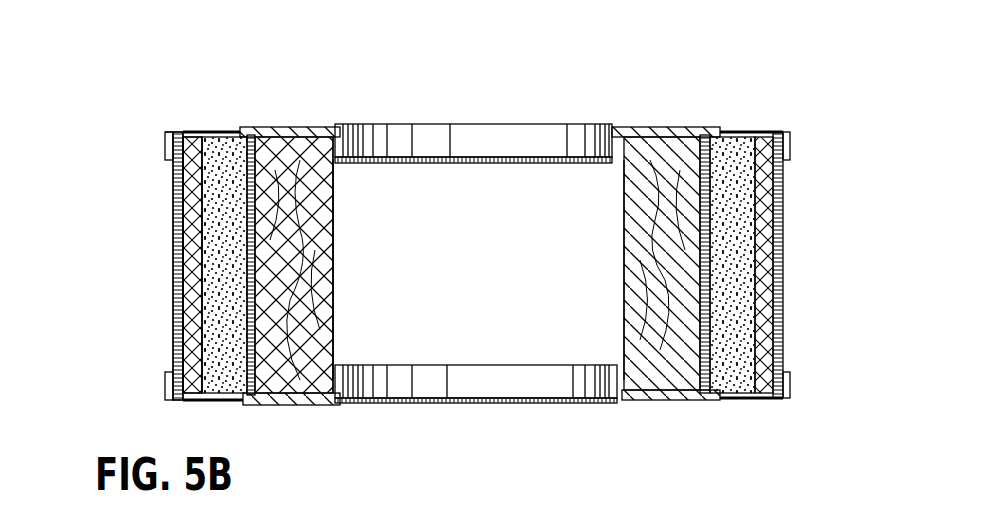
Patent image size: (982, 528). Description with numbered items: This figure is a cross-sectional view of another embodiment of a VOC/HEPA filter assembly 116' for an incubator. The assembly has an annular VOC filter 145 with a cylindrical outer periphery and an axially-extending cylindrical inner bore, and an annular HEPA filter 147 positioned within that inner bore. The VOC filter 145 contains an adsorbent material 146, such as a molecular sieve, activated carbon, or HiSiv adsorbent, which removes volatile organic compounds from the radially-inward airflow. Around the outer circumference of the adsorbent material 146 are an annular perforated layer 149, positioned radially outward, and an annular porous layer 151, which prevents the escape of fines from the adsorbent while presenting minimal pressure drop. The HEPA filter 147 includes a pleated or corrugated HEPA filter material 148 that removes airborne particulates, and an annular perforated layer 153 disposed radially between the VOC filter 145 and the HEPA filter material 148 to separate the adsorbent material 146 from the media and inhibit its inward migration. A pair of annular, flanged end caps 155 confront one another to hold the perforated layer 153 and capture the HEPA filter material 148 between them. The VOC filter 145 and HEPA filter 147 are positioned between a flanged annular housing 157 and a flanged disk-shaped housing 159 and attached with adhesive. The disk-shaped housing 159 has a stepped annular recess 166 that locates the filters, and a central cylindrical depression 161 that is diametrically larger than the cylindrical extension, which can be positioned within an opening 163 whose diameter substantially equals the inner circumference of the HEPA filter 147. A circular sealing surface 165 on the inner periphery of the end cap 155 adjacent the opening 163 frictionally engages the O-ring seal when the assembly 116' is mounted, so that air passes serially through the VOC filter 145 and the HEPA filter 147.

The VOC/HEPA filter assembly 116' is at (302, 73).
The VOC filter 145 is at (178, 314).
The adsorbent material 146 is at (212, 138).
The HEPA filter 147 is at (333, 297).
The HEPA filter material 148 is at (322, 213).
The perforated layer 149 is at (178, 200).
The porous layer 151 is at (180, 232).
The perforated layer 153 is at (289, 127).
The end caps 155 is at (311, 127).
The flanged annular housing 157 is at (215, 400).
The flanged disk-shaped housing 159 is at (630, 126).
The central cylindrical depression 161 is at (505, 141).
The opening 163 is at (616, 406).
The sealing surface 165 is at (605, 358).
The stepped annular recess 166 is at (668, 126).